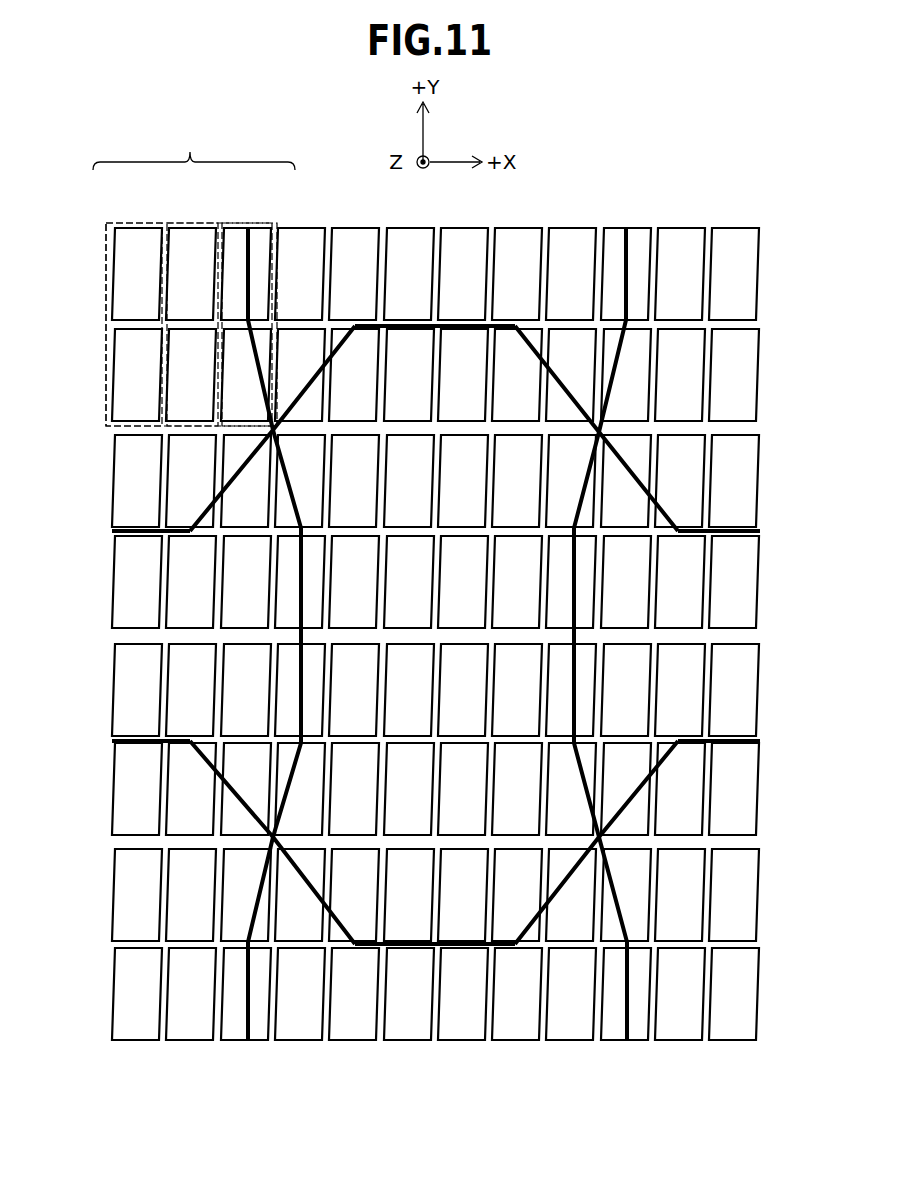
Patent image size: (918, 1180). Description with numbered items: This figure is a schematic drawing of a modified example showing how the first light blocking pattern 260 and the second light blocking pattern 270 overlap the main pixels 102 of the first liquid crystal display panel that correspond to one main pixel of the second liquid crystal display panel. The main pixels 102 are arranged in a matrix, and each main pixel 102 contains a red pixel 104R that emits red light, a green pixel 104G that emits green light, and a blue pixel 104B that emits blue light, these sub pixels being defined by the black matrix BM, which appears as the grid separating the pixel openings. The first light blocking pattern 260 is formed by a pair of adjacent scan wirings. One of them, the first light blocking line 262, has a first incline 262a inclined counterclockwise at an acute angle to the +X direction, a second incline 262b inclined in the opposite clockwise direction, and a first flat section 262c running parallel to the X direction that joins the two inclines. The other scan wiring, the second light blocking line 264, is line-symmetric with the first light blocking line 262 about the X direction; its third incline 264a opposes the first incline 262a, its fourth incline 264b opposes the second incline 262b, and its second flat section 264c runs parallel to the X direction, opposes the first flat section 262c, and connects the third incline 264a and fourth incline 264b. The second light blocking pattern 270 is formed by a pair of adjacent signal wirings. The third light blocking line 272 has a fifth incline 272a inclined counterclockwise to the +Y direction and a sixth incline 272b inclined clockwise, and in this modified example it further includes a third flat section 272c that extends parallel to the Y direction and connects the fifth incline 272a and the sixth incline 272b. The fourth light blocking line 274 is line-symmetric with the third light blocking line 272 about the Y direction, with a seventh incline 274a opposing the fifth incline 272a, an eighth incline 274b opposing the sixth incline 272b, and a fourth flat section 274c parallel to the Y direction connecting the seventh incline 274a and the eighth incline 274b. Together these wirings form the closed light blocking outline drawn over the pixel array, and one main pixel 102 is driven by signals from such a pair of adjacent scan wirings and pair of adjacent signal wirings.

The main pixel 102 is at (194, 274).
The red pixel 104R is at (122, 223).
The green pixel 104G is at (188, 223).
The blue pixel 104B is at (255, 223).
The black matrix BM is at (127, 327).
The first light blocking pattern 260 is at (464, 638).
The first light blocking line 262 is at (760, 532).
The first incline 262a is at (240, 465).
The second incline 262b is at (633, 463).
The first flat section 262c is at (142, 530).
The second light blocking line 264 is at (760, 742).
The third incline 264a is at (250, 818).
The fourth incline 264b is at (625, 812).
The second flat section 264c is at (150, 740).
The second light blocking pattern 270 is at (438, 665).
The third light blocking line 272 is at (247, 1032).
The fifth incline 272a is at (249, 355).
The sixth incline 272b is at (258, 912).
The third flat section 272c is at (248, 250).
The fourth light blocking line 274 is at (625, 1032).
The seventh incline 274a is at (626, 355).
The eighth incline 274b is at (625, 930).
The fourth flat section 274c is at (626, 250).